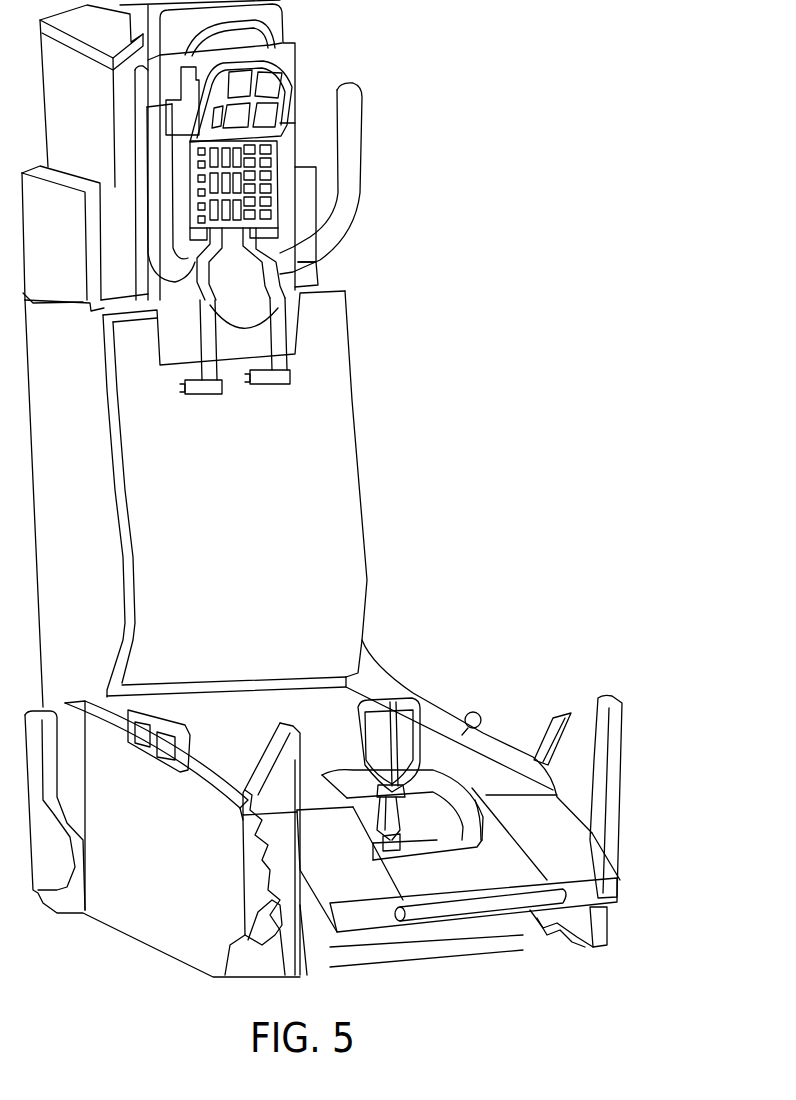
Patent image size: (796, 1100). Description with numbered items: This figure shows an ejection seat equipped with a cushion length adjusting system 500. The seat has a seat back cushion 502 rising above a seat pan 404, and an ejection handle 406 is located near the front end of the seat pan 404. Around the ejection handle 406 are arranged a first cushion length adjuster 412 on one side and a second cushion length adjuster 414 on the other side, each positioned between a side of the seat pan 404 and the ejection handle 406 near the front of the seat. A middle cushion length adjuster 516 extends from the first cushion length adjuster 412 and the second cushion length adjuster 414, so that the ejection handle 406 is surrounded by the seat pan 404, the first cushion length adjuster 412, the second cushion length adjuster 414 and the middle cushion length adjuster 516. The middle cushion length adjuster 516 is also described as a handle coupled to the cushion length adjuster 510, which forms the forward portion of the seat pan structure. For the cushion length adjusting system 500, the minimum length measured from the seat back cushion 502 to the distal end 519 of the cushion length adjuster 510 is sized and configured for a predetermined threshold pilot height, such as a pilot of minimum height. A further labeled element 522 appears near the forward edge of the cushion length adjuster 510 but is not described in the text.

The cushion length adjusting system 500 is at (625, 748).
The seat back cushion 502 is at (272, 453).
The seat pan 404 is at (342, 751).
The ejection handle 406 is at (420, 727).
The first cushion length adjuster 412 is at (345, 841).
The second cushion length adjuster 414 is at (565, 831).
The middle cushion length adjuster 516 is at (469, 888).
The cushion length adjuster 510 is at (588, 871).
The distal end 519 is at (603, 898).
The roller tube 522 is at (497, 907).